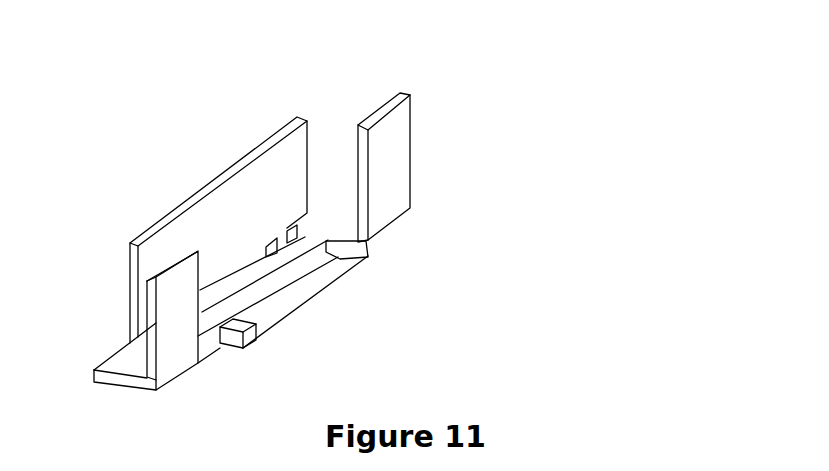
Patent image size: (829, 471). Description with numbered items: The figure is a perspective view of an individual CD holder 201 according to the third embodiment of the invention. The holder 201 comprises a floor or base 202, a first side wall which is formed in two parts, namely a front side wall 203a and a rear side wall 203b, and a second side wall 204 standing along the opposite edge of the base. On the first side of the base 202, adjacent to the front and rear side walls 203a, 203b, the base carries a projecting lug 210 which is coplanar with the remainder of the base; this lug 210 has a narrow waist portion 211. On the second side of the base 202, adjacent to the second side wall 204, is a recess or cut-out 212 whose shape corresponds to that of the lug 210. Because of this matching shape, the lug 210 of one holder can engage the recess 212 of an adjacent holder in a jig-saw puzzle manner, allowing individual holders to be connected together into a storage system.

The individual CD holder 201 is at (343, 99).
The base 202 is at (133, 357).
The front side wall 203a is at (175, 348).
The rear side wall 203b is at (378, 160).
The second side wall 204 is at (197, 207).
The projecting lug 210 is at (256, 330).
The narrow waist portion 211 is at (220, 325).
The recess 212 is at (247, 257).